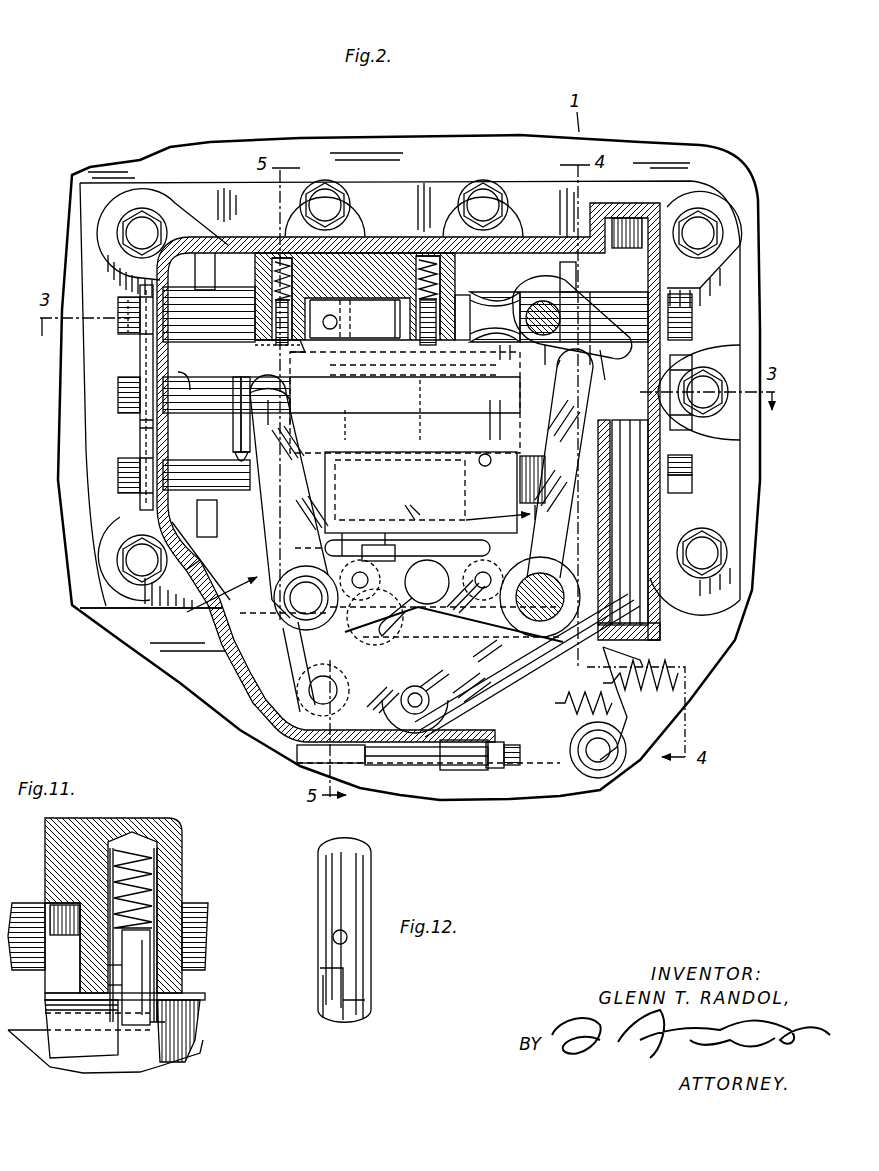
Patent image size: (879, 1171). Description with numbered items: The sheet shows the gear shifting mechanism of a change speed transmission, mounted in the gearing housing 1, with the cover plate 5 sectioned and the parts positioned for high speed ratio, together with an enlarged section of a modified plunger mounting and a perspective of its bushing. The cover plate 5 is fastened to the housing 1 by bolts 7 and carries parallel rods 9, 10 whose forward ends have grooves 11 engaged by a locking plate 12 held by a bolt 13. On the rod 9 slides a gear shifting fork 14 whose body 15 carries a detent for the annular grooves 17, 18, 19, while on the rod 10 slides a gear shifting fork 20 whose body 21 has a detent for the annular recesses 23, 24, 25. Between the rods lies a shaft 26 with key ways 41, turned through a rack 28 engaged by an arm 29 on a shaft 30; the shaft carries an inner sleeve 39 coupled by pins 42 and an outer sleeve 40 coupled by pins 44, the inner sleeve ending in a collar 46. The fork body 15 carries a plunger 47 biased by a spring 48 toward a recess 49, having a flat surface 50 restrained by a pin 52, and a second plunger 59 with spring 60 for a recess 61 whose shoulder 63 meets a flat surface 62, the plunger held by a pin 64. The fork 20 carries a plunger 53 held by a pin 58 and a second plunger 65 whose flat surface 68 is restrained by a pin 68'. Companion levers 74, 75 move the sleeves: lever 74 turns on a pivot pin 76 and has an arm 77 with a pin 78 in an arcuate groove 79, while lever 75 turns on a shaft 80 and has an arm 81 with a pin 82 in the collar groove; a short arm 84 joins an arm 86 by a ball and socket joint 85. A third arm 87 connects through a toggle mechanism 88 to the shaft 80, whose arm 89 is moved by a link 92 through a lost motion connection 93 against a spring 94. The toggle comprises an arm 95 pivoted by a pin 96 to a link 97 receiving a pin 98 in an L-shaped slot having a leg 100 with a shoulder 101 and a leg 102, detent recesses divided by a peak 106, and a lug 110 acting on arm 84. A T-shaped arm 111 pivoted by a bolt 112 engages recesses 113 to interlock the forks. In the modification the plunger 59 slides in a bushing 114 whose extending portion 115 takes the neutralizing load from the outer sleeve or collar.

In FIG. 2, the housing 1 is at (122, 624).
In FIG. 2, the cover plate 5 is at (238, 680).
In FIG. 2, the bolts 7 is at (706, 540).
In FIG. 2, the rod 9 is at (668, 316).
In FIG. 11, the rod 9 is at (210, 926).
In FIG. 2, the rod 10 is at (684, 479).
In FIG. 2, the grooves 11 is at (135, 462).
In FIG. 2, the locking plate 12 is at (140, 445).
In FIG. 2, the bolt 13 is at (120, 400).
In FIG. 2, the gear shifting fork 14 is at (212, 262).
In FIG. 2, the body of the shifting fork 15 is at (365, 252).
In FIG. 11, the body of the shifting fork 15 is at (138, 820).
In FIG. 2, the annular groove 17 is at (340, 300).
In FIG. 2, the annular groove 18 is at (418, 258).
In FIG. 2, the annular groove 19 is at (478, 320).
In FIG. 2, the gear shifting fork 20 is at (578, 276).
In FIG. 2, the body of the shifting fork 21 is at (384, 556).
In FIG. 2, the annular recess 23 is at (316, 505).
In FIG. 2, the annular recess 24 is at (402, 482).
In FIG. 2, the annular recess 25 is at (420, 512).
In FIG. 2, the shaft 26 is at (140, 422).
In FIG. 2, the rack 28 is at (684, 465).
In FIG. 2, the arm 29 is at (582, 330).
In FIG. 2, the shaft 30 is at (548, 300).
In FIG. 2, the inner sleeve 39 is at (233, 430).
In FIG. 11, the inner sleeve 39 is at (195, 1058).
In FIG. 2, the outer sleeve 40 is at (248, 440).
In FIG. 11, the outer sleeve 40 is at (60, 1037).
In FIG. 2, the key ways 41 is at (186, 390).
In FIG. 2, the pins 42 is at (228, 376).
In FIG. 2, the pins 44 is at (376, 412).
In FIG. 2, the collar 46 is at (562, 468).
In FIG. 11, the collar 46 is at (172, 1004).
In FIG. 2, the plunger 47 is at (298, 354).
In FIG. 2, the spring 48 is at (272, 270).
In FIG. 2, the recess 49 is at (276, 318).
In FIG. 2, the flat surface 50 is at (340, 326).
In FIG. 2, the pin 52 is at (332, 315).
In FIG. 2, the plunger 53 is at (345, 432).
In FIG. 2, the pin 58 is at (388, 532).
In FIG. 2, the second plunger 59 is at (448, 294).
In FIG. 11, the second plunger 59 is at (140, 985).
In FIG. 2, the spring 60 is at (448, 272).
In FIG. 11, the spring 60 is at (160, 862).
In FIG. 2, the recess 61 is at (556, 356).
In FIG. 2, the flat surface 62 is at (400, 354).
In FIG. 11, the flat surface 62 is at (108, 986).
In FIG. 2, the shoulder 63 is at (500, 352).
In FIG. 2, the pin 64 is at (396, 316).
In FIG. 11, the pin 64 is at (108, 972).
In FIG. 2, the second plunger 65 is at (492, 425).
In FIG. 2, the flat surface 68 is at (532, 479).
In FIG. 2, the pin 68' is at (496, 471).
In FIG. 2, the companion lever 74 is at (188, 608).
In FIG. 2, the companion lever 75 is at (487, 523).
In FIG. 2, the pivot pin 76 is at (290, 618).
In FIG. 2, the arm 77 is at (270, 530).
In FIG. 2, the pin 78 is at (282, 400).
In FIG. 2, the arcuate groove 79 is at (274, 442).
In FIG. 2, the shaft 80 is at (536, 584).
In FIG. 2, the arm 81 is at (535, 510).
In FIG. 2, the pin 82 is at (578, 342).
In FIG. 2, the short arm 84 is at (455, 575).
In FIG. 2, the ball and socket joint 85 is at (412, 512).
In FIG. 2, the arm 86 is at (342, 555).
In FIG. 2, the third arm 87 is at (290, 650).
In FIG. 2, the toggle mechanism 88 is at (446, 770).
In FIG. 2, the arm 89 is at (640, 745).
In FIG. 2, the link 92 is at (400, 766).
In FIG. 2, the lost motion connection 93 is at (472, 768).
In FIG. 2, the spring 94 is at (612, 704).
In FIG. 2, the arm 95 is at (496, 670).
In FIG. 2, the pin 96 is at (413, 692).
In FIG. 2, the link 97 is at (338, 742).
In FIG. 2, the pin 98 is at (310, 690).
In FIG. 2, the leg 100 is at (318, 702).
In FIG. 2, the shoulder 101 is at (408, 690).
In FIG. 2, the leg 102 is at (372, 645).
In FIG. 2, the peak 106 is at (368, 576).
In FIG. 2, the lug 110 is at (466, 684).
In FIG. 2, the T-shaped arm 111 is at (424, 410).
In FIG. 2, the bolt 112 is at (705, 368).
In FIG. 2, the recesses 113 is at (350, 315).
In FIG. 11, the bushing 114 is at (158, 888).
In FIG. 12, the bushing 114 is at (360, 883).
In FIG. 11, the extending portion 115 is at (166, 1022).
In FIG. 12, the extending portion 115 is at (360, 996).